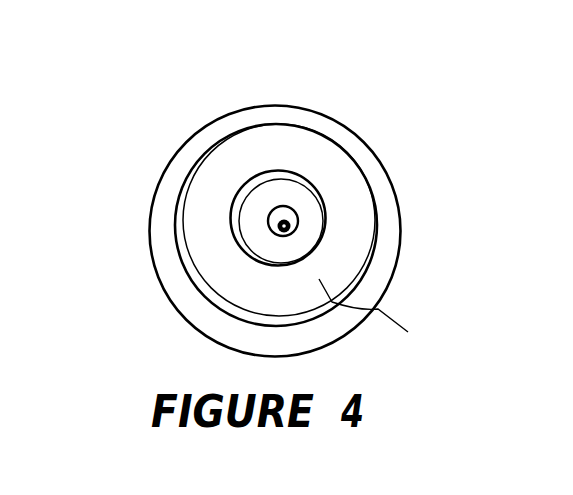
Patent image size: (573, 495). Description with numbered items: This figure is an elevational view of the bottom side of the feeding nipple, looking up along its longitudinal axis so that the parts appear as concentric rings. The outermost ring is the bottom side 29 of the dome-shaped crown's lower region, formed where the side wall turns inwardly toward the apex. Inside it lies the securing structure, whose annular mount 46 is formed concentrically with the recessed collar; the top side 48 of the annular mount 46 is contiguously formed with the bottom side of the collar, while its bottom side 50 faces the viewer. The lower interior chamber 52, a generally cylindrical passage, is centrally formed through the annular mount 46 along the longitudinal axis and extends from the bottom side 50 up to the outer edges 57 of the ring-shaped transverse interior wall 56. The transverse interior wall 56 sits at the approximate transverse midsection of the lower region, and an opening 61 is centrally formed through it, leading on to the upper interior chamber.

The bottom side 29 is at (384, 222).
The annular mount 46 is at (366, 168).
The top side 48 is at (212, 313).
The bottom side 50 is at (376, 316).
The lower interior chamber 52 is at (252, 227).
The transverse interior wall 56 is at (303, 251).
The outer edges 57 is at (273, 192).
The opening 61 is at (290, 212).